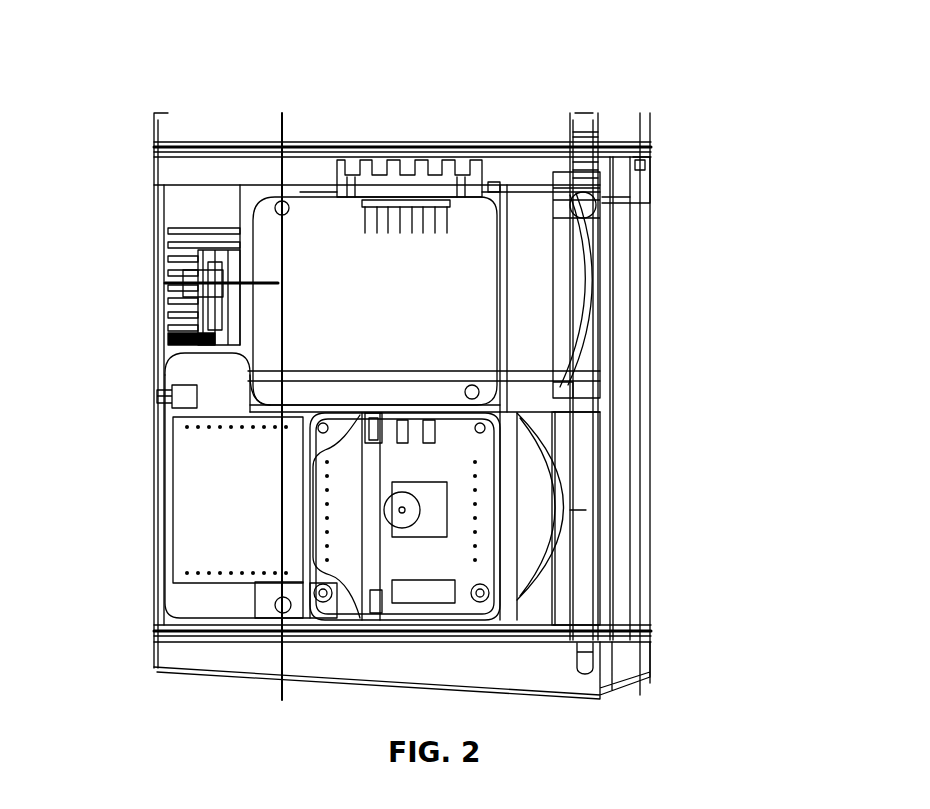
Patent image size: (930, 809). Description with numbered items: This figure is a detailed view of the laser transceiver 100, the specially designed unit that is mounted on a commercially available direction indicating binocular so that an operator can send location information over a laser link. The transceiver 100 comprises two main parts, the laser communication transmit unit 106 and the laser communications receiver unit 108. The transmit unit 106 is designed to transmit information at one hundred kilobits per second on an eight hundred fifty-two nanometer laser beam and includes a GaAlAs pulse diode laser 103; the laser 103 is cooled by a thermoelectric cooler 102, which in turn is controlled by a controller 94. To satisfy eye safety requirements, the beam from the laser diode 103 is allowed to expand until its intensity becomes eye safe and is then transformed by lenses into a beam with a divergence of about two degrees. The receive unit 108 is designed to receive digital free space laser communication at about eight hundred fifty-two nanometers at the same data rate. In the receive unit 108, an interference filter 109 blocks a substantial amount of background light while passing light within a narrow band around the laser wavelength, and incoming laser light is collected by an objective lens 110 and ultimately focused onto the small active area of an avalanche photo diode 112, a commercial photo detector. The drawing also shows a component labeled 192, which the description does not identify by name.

The laser transceiver 100 is at (645, 60).
The laser communication transmit unit 106 is at (716, 186).
The laser communications receiver unit 108 is at (708, 556).
The controller 94 is at (400, 207).
The thermoelectric cooler 102 is at (213, 270).
The pulse diode laser 103 is at (228, 297).
The battery pack 192 is at (197, 482).
The avalanche photo diode 112 is at (418, 535).
The interference filter 109 is at (620, 420).
The objective lens 110 is at (620, 472).